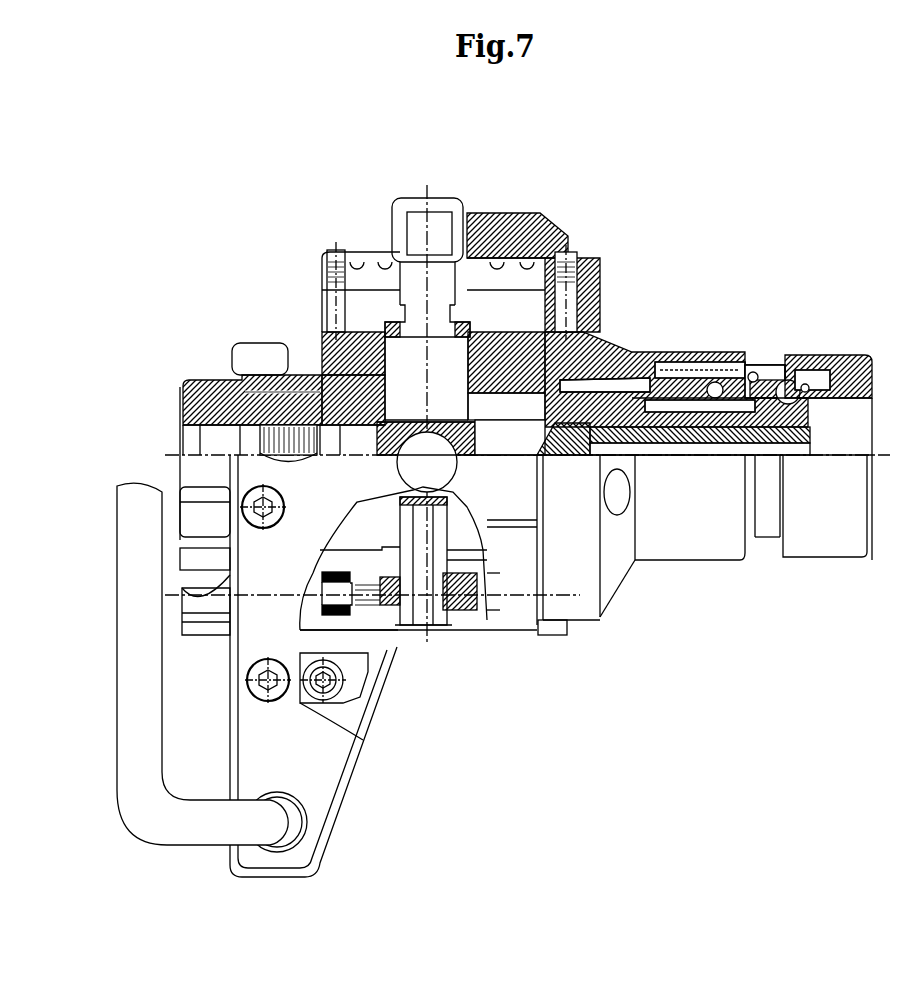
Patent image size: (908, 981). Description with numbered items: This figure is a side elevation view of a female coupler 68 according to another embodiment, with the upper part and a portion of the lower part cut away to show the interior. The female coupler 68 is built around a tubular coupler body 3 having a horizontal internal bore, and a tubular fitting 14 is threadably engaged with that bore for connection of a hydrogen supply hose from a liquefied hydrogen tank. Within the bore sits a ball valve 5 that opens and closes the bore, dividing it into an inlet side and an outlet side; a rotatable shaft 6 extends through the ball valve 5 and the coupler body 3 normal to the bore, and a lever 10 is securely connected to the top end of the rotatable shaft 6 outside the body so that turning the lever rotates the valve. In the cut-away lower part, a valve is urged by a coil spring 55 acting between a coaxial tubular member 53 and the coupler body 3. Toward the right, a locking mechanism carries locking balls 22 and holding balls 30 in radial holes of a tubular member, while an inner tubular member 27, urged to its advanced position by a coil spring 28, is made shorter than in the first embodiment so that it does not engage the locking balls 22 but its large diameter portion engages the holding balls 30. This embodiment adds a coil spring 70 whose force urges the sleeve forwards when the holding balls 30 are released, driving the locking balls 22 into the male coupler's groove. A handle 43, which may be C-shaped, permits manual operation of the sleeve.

The female coupler 68 is at (518, 148).
The lever 10 is at (400, 200).
The tubular coupler body 3 is at (320, 340).
The tubular fitting 14 is at (182, 412).
The handle 43 is at (188, 830).
The ball valve 5 is at (468, 440).
The rotatable shaft 6 is at (432, 607).
The coil spring 28 is at (647, 405).
The coil spring 55 is at (663, 410).
The coil spring 70 is at (668, 390).
The holding balls 30 is at (714, 383).
The inner tubular member 27 is at (742, 360).
The coaxial tubular member 53 is at (757, 373).
The locking balls 22 is at (803, 358).